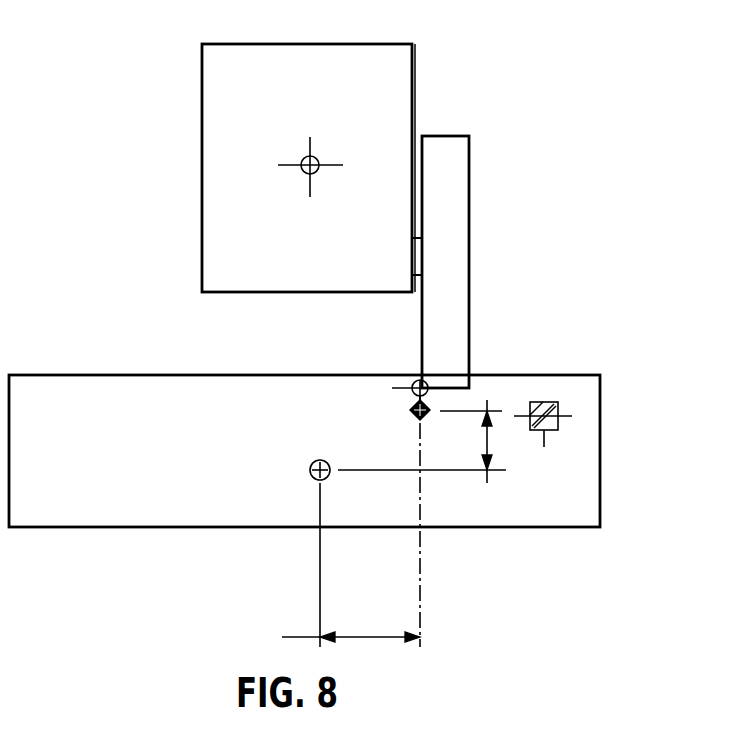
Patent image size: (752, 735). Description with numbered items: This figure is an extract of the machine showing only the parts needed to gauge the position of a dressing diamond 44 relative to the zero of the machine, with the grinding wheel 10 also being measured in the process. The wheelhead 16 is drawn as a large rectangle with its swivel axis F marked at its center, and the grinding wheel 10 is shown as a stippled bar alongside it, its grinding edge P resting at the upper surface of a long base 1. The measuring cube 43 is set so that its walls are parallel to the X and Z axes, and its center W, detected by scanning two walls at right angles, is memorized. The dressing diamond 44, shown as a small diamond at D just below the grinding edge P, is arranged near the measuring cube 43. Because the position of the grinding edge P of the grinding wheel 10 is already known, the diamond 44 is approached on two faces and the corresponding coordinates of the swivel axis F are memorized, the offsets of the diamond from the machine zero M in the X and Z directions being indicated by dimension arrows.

The wheelhead 16 is at (190, 118).
The grinding wheel 10 is at (476, 184).
The machine table / base 1 is at (54, 459).
The dressing diamond 44 is at (400, 399).
The measuring cube 43 is at (550, 388).